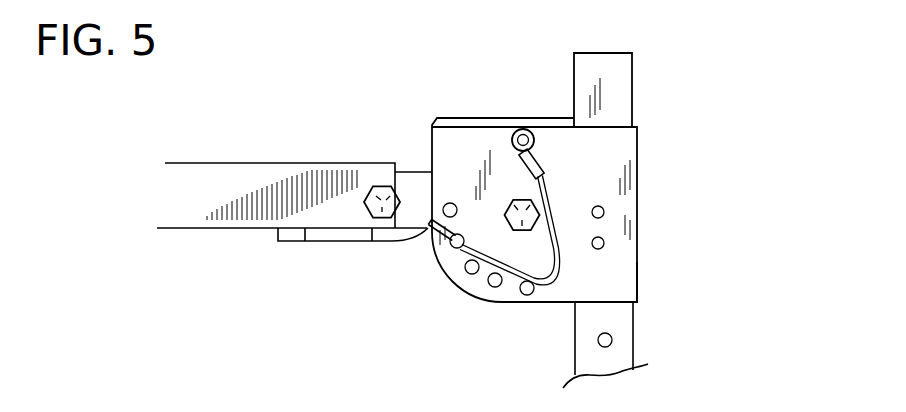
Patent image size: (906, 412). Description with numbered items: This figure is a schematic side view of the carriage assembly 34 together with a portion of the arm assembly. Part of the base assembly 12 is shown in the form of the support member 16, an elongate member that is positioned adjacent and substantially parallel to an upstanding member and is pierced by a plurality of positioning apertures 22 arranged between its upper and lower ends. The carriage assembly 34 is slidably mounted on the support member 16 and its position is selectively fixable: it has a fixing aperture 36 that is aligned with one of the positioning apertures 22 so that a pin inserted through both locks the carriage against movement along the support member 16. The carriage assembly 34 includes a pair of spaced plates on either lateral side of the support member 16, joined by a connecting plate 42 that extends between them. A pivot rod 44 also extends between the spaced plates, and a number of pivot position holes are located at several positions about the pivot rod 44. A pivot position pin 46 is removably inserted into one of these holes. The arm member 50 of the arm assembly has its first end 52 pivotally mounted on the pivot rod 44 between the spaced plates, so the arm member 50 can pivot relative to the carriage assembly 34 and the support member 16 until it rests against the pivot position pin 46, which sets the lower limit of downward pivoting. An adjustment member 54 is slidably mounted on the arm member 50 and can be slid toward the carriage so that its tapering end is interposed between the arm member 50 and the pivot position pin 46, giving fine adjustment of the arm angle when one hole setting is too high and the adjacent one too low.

The base assembly 12 is at (625, 332).
The support member 16 is at (627, 67).
The positioning apertures 22 is at (598, 341).
The carriage assembly 34 is at (626, 202).
The fixing aperture 36 is at (604, 243).
The connecting plate 42 is at (638, 282).
The pivot rod 44 is at (532, 208).
The pivot position pin 46 is at (443, 255).
The arm member 50 is at (190, 173).
The first end of the arm member 52 is at (420, 185).
The adjustment member 54 is at (337, 233).